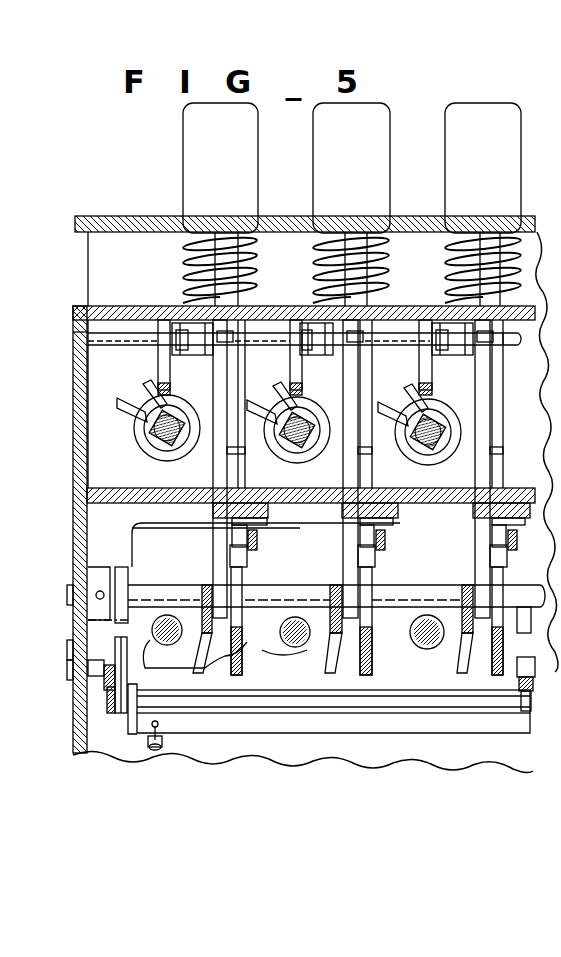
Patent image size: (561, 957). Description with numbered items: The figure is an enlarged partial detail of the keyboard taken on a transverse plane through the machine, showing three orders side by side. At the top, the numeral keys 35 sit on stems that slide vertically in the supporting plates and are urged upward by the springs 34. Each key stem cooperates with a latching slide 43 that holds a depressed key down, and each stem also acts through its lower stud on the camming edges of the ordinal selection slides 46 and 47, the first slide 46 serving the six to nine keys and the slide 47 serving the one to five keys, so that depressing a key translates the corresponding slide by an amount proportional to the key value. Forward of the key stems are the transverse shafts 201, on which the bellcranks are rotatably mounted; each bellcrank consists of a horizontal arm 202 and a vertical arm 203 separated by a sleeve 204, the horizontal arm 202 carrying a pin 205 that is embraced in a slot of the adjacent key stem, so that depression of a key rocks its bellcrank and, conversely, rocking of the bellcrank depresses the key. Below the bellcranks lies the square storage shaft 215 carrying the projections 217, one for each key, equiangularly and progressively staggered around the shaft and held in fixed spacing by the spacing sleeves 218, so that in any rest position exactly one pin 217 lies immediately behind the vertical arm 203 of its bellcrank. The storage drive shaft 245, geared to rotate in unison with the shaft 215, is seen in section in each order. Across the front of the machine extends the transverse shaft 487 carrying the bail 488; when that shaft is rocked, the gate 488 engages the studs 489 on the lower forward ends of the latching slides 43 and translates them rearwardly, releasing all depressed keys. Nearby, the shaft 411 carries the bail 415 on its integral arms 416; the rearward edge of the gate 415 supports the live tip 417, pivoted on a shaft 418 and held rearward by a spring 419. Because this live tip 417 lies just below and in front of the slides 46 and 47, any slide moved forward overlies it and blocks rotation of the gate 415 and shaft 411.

The numeral key 35 is at (455, 146).
The spring 34 is at (442, 270).
The transverse shaft 201 is at (134, 339).
The horizontal arm 202 is at (205, 335).
The vertical arm 203 is at (161, 373).
The sleeve 204 is at (182, 348).
The pin 205 is at (234, 338).
The storage shaft 215 is at (157, 434).
The projection 217 is at (384, 410).
The spacing sleeve 218 is at (433, 417).
The latching slide 43 is at (268, 510).
The stud 489 is at (254, 540).
The ordinal selection slide 47 is at (372, 658).
The bail 488 is at (434, 565).
The transverse shaft 487 is at (138, 592).
The ordinal selection slide 46 is at (207, 585).
The storage drive shaft 245 is at (165, 634).
The live tip 417 is at (262, 650).
The bail 415 is at (130, 722).
The integral arm 416 is at (120, 714).
The shaft 418 is at (108, 677).
The shaft 411 is at (67, 673).
The spring 419 is at (160, 727).